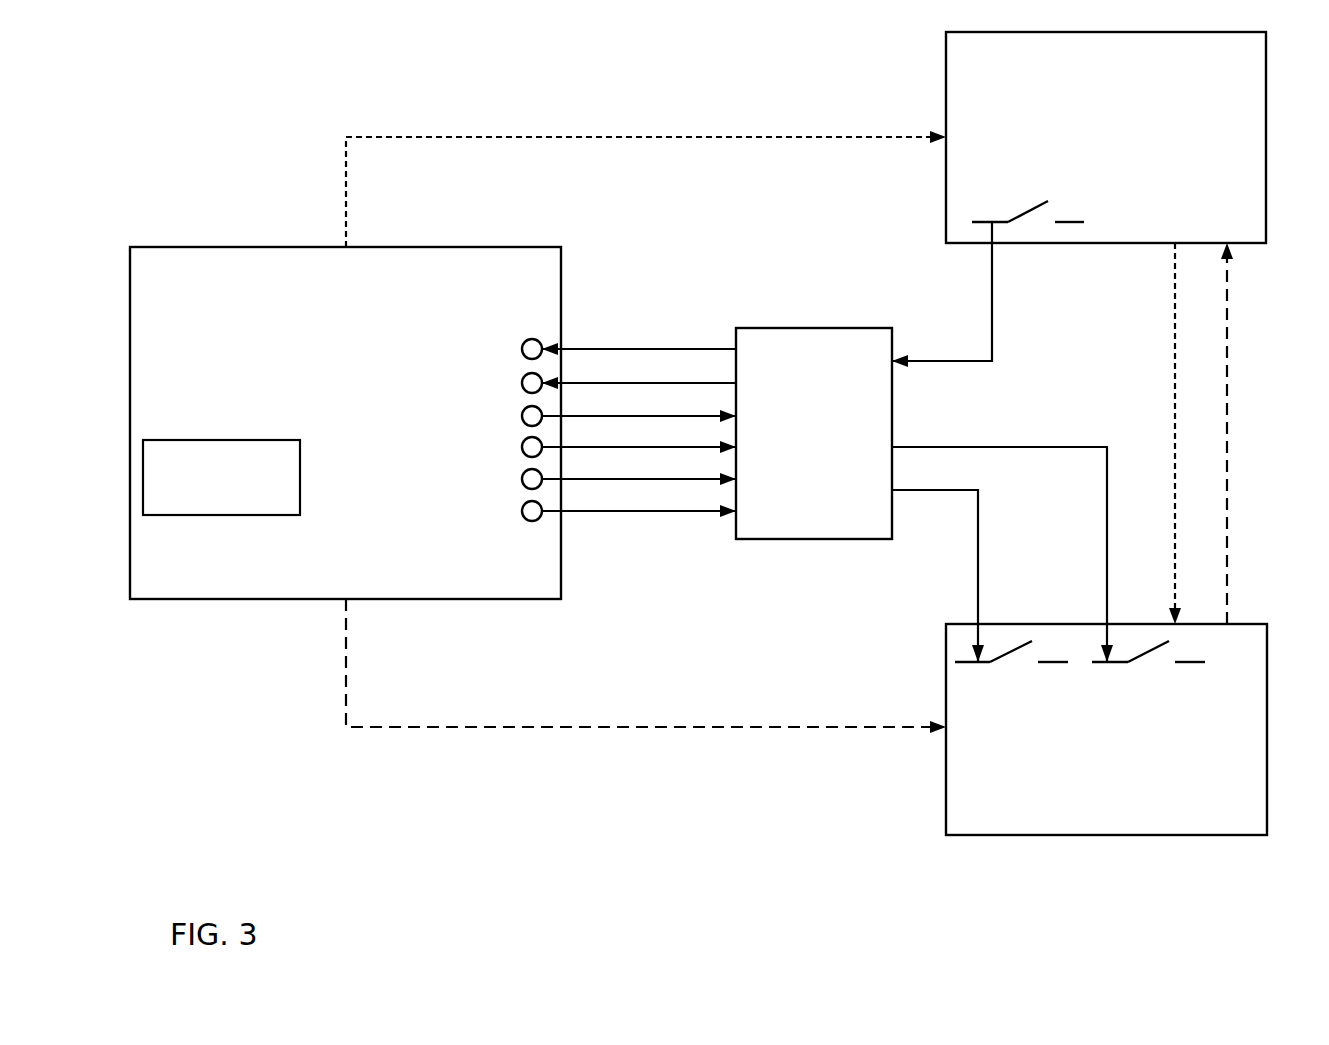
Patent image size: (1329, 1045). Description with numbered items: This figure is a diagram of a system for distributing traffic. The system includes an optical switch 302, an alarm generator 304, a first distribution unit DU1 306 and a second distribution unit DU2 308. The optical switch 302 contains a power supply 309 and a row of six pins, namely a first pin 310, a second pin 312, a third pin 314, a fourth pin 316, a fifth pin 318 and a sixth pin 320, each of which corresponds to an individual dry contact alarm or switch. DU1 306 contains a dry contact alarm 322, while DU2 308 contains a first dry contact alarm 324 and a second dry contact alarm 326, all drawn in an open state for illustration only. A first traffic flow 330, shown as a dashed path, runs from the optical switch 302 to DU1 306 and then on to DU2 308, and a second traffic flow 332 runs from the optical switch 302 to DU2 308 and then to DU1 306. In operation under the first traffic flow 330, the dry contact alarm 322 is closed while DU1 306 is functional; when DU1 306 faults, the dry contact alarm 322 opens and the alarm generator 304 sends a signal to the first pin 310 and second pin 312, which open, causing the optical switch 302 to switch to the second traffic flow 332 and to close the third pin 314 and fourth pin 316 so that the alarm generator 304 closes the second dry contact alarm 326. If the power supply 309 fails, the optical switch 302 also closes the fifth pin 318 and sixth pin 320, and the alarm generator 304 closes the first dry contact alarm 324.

The optical switch 302 is at (326, 582).
The alarm generator 304 is at (794, 474).
The first DU (DU1) 306 is at (1088, 92).
The second DU (DU2) 308 is at (1088, 829).
The power supply 309 is at (203, 504).
The first pin 310 is at (521, 349).
The second pin 312 is at (521, 383).
The third pin 314 is at (521, 416).
The fourth pin 316 is at (521, 447).
The fifth pin 318 is at (521, 479).
The sixth pin 320 is at (521, 511).
The dry contact alarm 322 is at (1004, 221).
The first dry contact alarm 324 is at (986, 668).
The second dry contact alarm 326 is at (1127, 668).
The first traffic flow 330 is at (678, 138).
The second traffic flow 332 is at (687, 727).